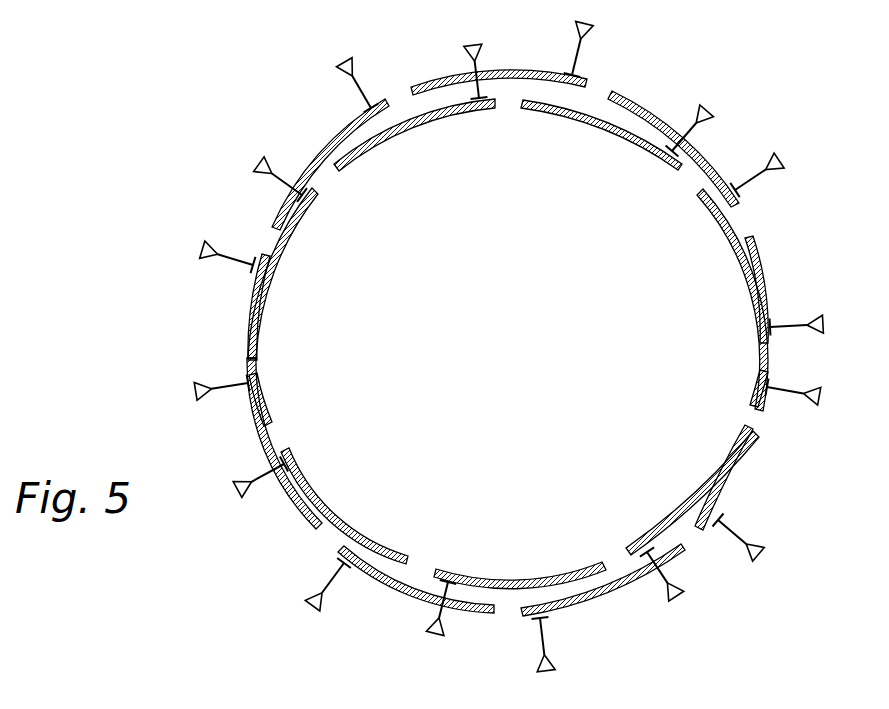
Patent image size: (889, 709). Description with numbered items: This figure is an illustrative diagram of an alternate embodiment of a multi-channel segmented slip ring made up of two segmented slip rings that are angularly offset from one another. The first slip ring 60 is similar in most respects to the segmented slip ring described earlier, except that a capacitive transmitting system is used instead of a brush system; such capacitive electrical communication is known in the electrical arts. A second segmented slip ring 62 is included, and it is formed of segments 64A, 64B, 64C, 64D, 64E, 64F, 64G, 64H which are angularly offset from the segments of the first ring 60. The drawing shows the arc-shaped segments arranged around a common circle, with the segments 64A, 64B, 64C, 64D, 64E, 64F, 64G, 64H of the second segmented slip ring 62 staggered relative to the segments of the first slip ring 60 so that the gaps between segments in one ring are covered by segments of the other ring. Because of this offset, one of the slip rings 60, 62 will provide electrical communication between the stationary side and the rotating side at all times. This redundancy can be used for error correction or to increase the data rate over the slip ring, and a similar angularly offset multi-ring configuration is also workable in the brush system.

The first slip ring 60 is at (597, 603).
The second segmented slip ring 62 is at (701, 134).
The segment 64A is at (253, 293).
The segment 64B is at (297, 503).
The segment 64C is at (478, 587).
The segment 64D is at (720, 478).
The segment 64E is at (757, 234).
The segment 64F is at (630, 101).
The segment 64G is at (422, 86).
The segment 64H is at (339, 131).